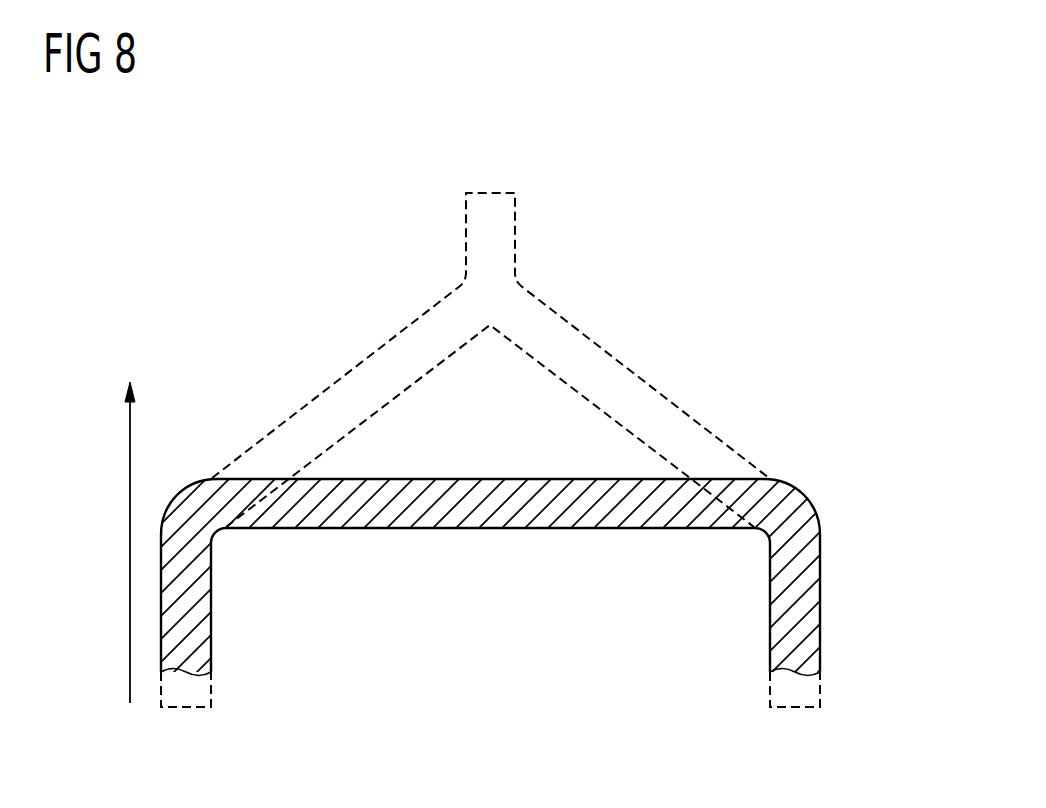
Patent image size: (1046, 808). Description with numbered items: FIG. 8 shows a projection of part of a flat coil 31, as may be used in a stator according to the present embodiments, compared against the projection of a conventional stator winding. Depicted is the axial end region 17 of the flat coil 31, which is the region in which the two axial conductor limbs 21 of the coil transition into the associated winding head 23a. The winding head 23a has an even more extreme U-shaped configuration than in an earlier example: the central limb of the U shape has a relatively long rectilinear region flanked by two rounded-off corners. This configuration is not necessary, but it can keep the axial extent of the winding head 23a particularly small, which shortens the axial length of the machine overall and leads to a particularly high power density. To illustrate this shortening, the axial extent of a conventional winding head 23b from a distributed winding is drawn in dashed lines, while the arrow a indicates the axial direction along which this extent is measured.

The axial end region 17 is at (910, 182).
The axial conductor limbs 21 is at (818, 608).
The winding head 23a is at (798, 483).
The conventional winding head 23b is at (650, 352).
The flat coil 31 is at (243, 264).
The direction arrow a is at (128, 528).